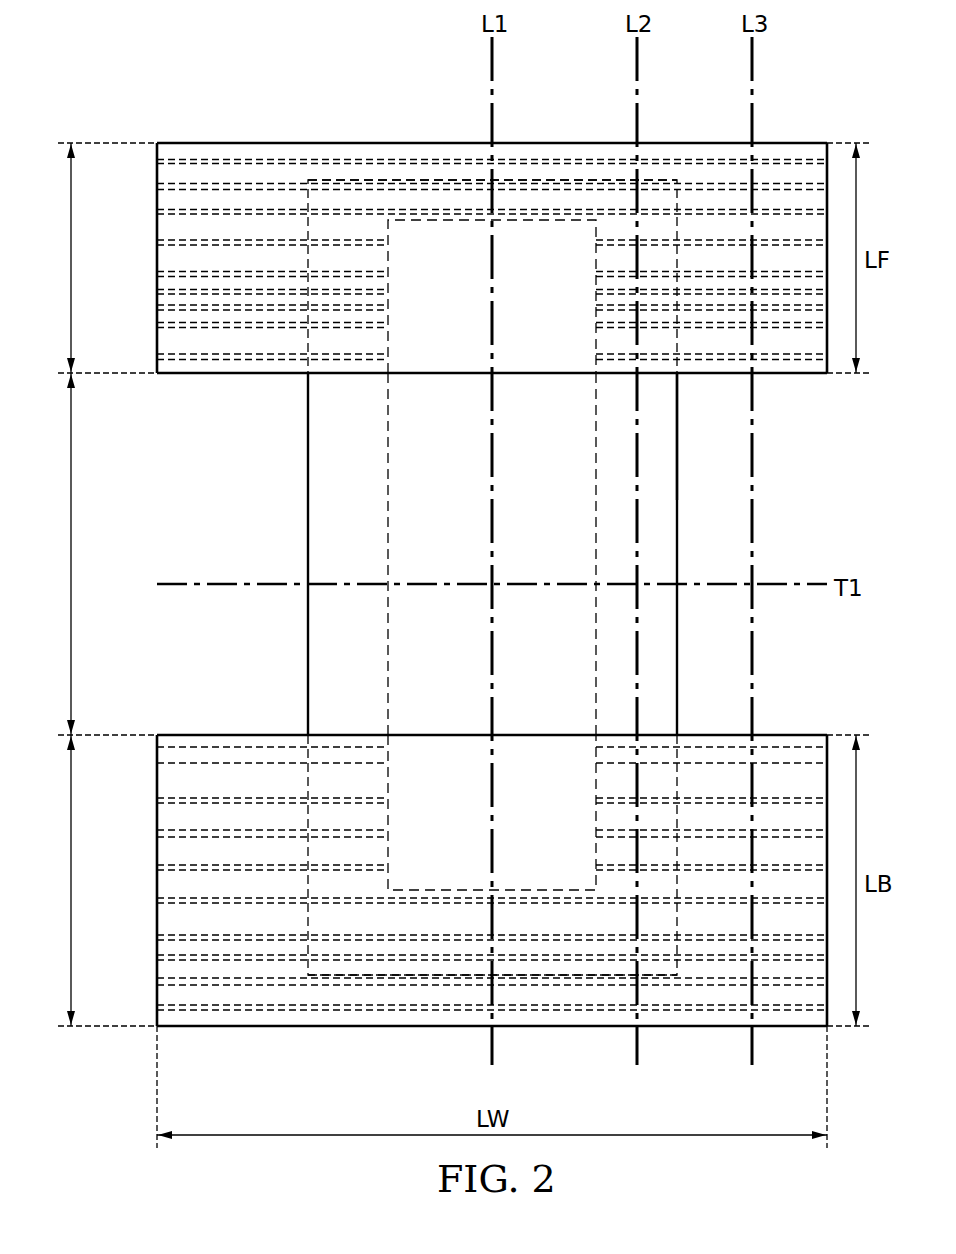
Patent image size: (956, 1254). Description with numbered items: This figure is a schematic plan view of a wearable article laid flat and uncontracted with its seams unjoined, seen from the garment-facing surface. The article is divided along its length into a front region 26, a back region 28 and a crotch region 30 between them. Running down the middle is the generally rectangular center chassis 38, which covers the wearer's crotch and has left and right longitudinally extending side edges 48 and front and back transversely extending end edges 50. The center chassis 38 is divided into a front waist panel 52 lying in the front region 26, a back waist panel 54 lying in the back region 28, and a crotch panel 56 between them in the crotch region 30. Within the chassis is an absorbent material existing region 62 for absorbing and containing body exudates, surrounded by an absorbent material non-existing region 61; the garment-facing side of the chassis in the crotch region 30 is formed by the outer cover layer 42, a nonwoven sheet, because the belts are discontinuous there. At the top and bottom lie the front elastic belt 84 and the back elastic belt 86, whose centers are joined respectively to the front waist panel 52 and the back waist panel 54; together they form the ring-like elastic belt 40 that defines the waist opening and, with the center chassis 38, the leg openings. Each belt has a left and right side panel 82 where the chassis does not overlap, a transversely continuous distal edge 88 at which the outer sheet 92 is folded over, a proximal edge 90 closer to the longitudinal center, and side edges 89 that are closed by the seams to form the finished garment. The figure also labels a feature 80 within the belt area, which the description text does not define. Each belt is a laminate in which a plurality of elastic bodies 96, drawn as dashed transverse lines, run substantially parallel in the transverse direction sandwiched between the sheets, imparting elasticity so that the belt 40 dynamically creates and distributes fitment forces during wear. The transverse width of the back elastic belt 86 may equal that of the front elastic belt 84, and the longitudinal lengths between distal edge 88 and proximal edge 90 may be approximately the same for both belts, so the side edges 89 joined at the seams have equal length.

The front region 26 is at (70, 258).
The back region 28 is at (70, 902).
The crotch region 30 is at (70, 552).
The center chassis 38 is at (688, 534).
The ring-like elastic belt 40 is at (684, 70).
The outer cover layer 42 is at (668, 640).
The longitudinally extending side edges 48 is at (306, 482).
The transversely extending end edges 50 is at (397, 178).
The front waist panel 52 is at (458, 330).
The back waist panel 54 is at (458, 830).
The crotch panel 56 is at (294, 556).
The absorbent material non-existing region 61 is at (366, 677).
The absorbent material existing region 62 is at (386, 500).
The belt inner edge 80 is at (460, 170).
The side panel 82 is at (218, 350).
The front elastic belt 84 is at (790, 143).
The back elastic belt 86 is at (195, 1027).
The distal edge 88 is at (527, 143).
The side edges 89 is at (156, 227).
The proximal edge 90 is at (282, 374).
The outer sheet 92 is at (189, 140).
The elastic bodies 96 is at (172, 184).